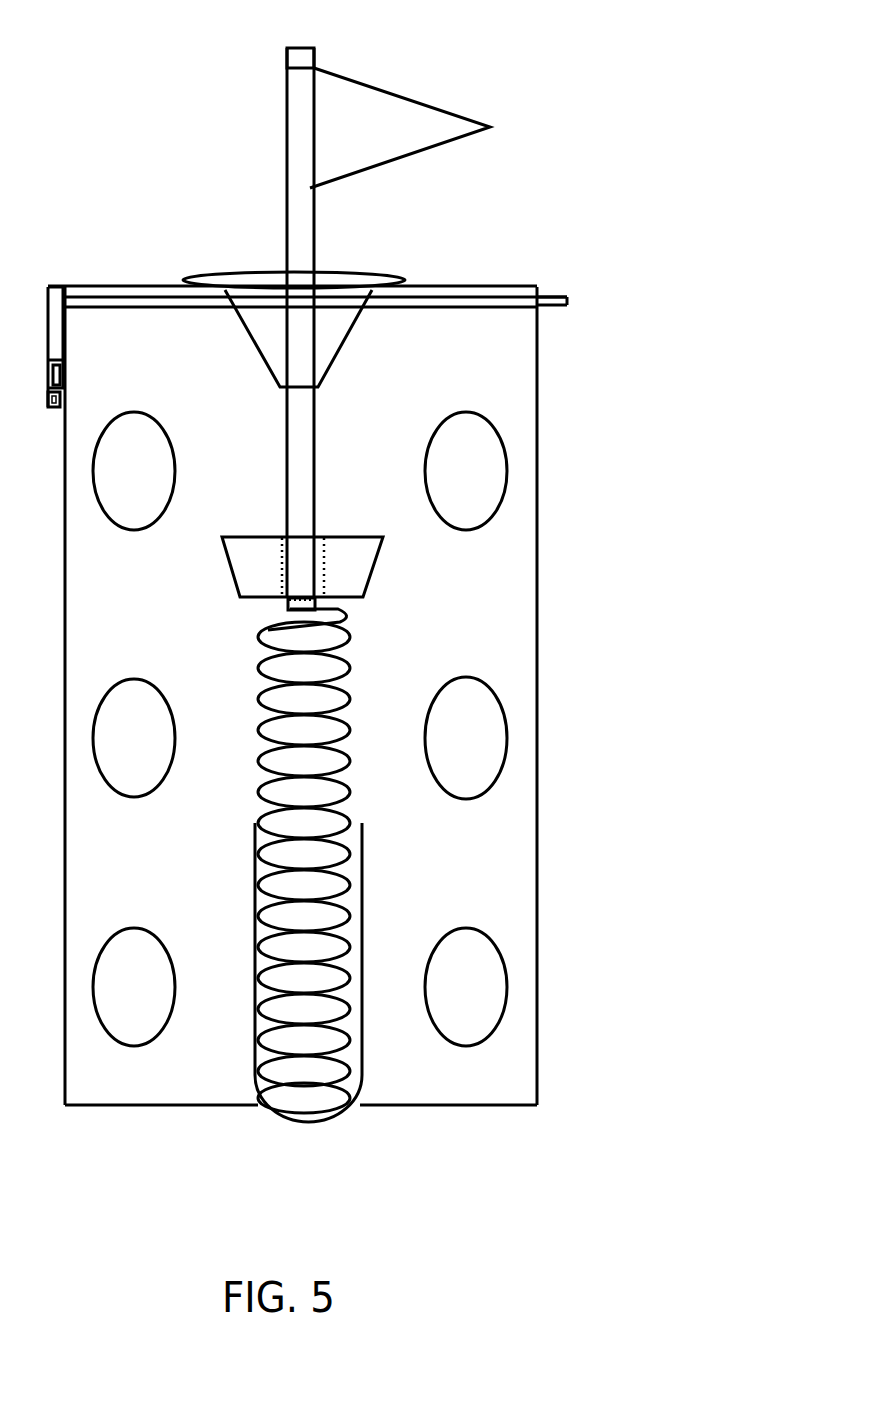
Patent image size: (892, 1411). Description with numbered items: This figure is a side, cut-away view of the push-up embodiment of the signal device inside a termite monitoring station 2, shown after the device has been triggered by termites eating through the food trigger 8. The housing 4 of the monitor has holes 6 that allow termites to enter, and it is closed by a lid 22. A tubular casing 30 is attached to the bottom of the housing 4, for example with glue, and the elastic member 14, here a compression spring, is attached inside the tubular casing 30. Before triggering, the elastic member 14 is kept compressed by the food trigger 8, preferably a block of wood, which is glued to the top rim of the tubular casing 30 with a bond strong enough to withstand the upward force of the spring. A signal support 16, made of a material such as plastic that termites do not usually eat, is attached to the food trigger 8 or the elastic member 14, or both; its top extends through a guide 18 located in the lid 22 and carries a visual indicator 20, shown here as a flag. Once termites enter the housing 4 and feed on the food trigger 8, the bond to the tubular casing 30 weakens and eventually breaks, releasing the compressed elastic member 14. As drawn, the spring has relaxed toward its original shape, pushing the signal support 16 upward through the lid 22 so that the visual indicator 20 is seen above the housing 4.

The monitoring station 2 is at (538, 757).
The housing 4 is at (538, 668).
The holes 6 is at (470, 482).
The food trigger 8 is at (355, 560).
The elastic member 14 is at (320, 822).
The signal support 16 is at (300, 407).
The guide 18 is at (328, 332).
The visual indicator 20 is at (407, 133).
The lid 22 is at (472, 290).
The tubular casing 30 is at (365, 880).